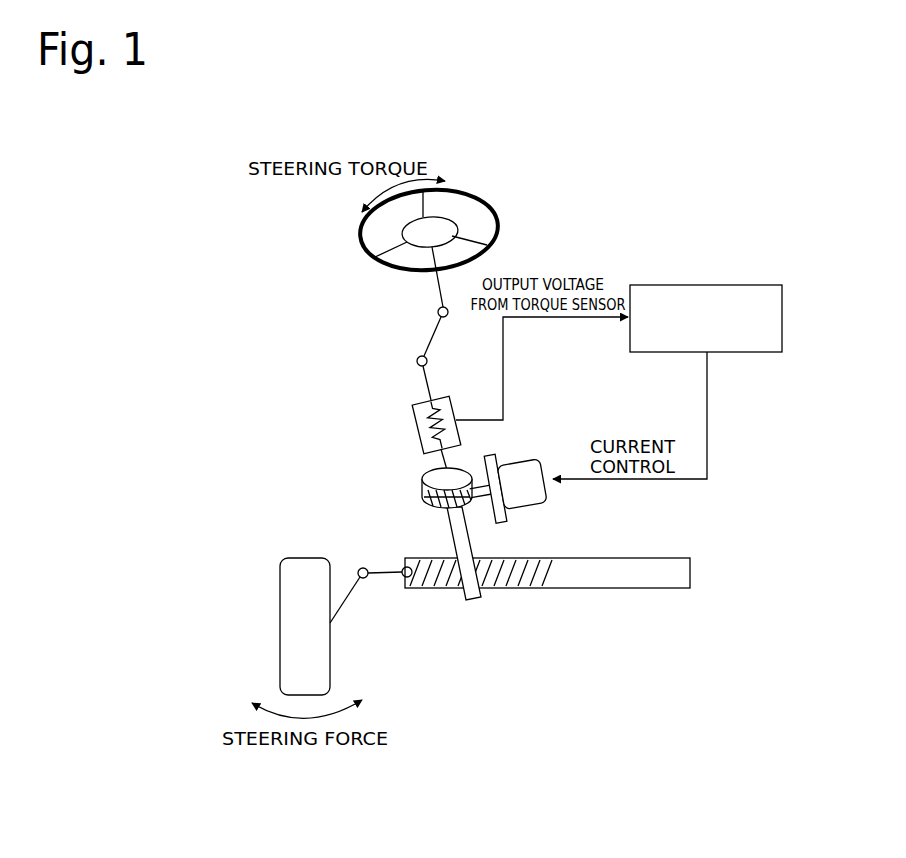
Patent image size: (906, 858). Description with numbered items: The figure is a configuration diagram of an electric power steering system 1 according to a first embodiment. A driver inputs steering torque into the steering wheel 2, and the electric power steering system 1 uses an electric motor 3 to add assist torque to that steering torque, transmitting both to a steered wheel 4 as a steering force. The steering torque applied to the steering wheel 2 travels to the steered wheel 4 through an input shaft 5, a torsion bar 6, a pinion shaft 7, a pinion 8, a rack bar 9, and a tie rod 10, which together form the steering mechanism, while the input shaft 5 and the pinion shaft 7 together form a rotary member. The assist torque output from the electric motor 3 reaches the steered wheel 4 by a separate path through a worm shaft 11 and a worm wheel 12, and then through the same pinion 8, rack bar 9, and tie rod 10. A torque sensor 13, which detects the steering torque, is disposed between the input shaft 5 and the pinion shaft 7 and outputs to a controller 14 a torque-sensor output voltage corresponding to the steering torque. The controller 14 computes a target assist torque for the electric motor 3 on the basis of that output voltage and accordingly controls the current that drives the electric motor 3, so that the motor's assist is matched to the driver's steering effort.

The electric power steering system 1 is at (598, 230).
The steering wheel 2 is at (358, 232).
The electric motor 3 is at (516, 470).
The steered wheel 4 is at (280, 592).
The input shaft 5 is at (423, 385).
The torsion bar 6 is at (412, 420).
The pinion shaft 7 is at (440, 466).
The pinion 8 is at (468, 601).
The rack bar 9 is at (634, 578).
The tie rod 10 is at (383, 578).
The worm shaft 11 is at (480, 500).
The worm wheel 12 is at (425, 485).
The torque sensor 13 is at (420, 440).
The controller 14 is at (732, 285).